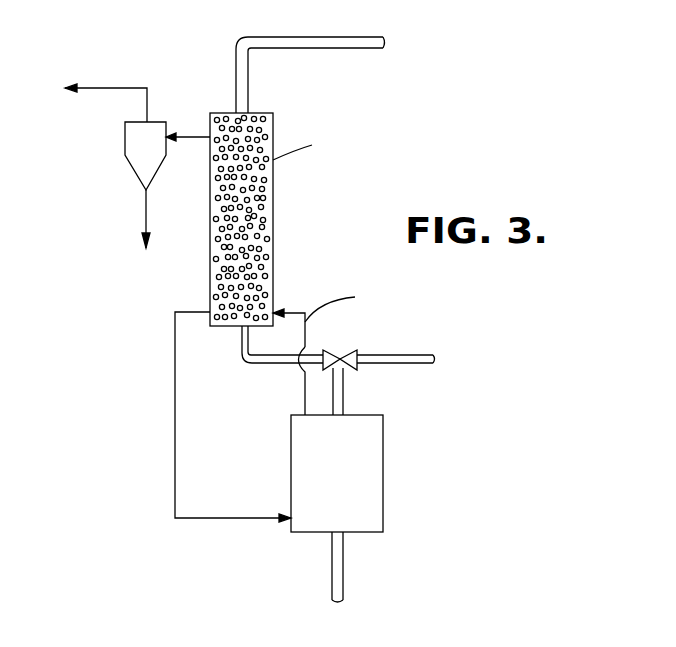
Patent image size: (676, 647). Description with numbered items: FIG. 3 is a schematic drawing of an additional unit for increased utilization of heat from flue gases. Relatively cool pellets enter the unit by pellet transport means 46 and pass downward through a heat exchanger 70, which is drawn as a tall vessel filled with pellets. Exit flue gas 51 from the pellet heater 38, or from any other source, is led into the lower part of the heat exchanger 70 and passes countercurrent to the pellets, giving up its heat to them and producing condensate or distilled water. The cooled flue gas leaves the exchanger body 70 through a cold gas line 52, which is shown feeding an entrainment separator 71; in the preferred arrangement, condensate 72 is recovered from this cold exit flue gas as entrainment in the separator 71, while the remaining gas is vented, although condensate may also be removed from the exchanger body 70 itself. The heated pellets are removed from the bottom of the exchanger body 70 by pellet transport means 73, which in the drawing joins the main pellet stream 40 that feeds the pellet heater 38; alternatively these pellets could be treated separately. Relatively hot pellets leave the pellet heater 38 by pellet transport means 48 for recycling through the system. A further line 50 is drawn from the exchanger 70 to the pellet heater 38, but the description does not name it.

The pellet heater 38 is at (383, 420).
The pellet transport 40 is at (345, 352).
The pellet transport means 46 is at (315, 37).
The pellet transport means 48 is at (332, 560).
The recycle gas line 50 is at (174, 455).
The exit flue gas 51 is at (298, 310).
The cold gas line 52 is at (193, 135).
The heat exchanger 70 is at (273, 225).
The entrainment separator 71 is at (126, 157).
The condensate 72 is at (146, 215).
The pellet transport means 73 is at (277, 364).